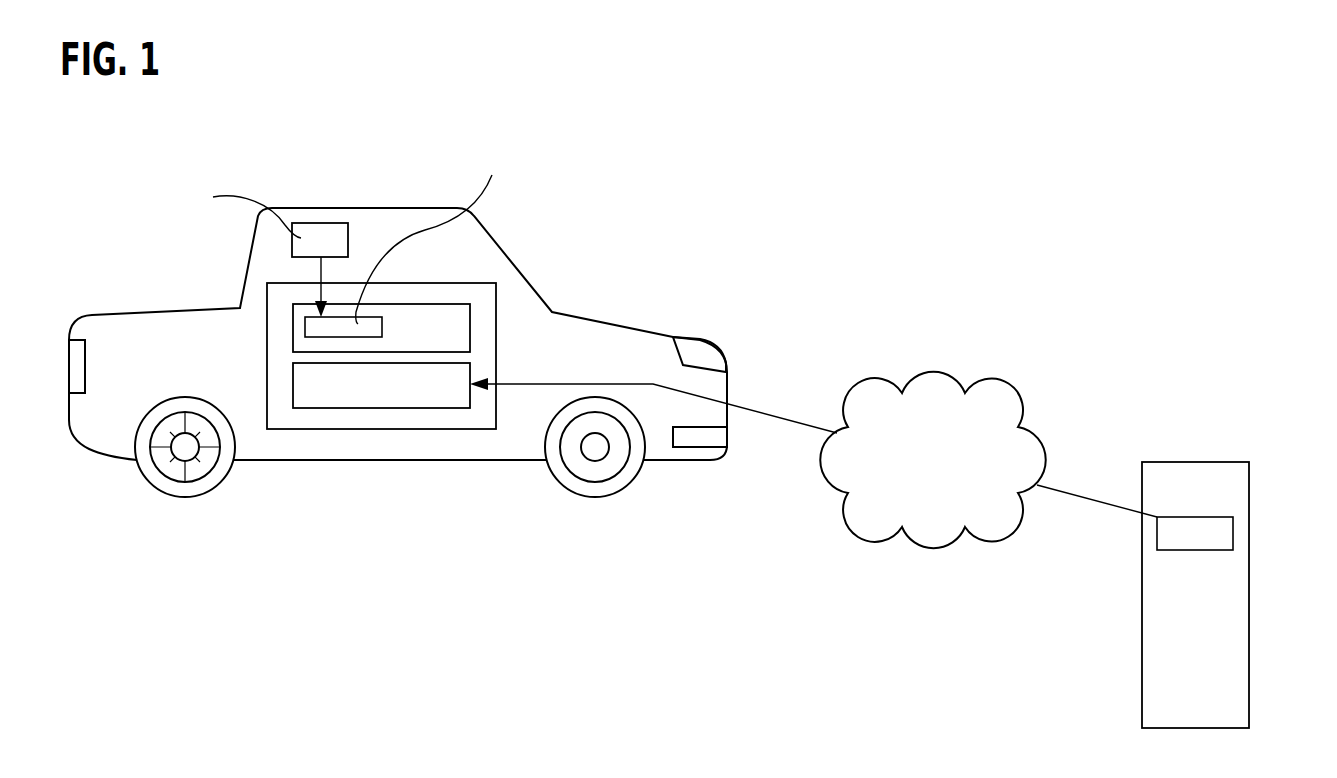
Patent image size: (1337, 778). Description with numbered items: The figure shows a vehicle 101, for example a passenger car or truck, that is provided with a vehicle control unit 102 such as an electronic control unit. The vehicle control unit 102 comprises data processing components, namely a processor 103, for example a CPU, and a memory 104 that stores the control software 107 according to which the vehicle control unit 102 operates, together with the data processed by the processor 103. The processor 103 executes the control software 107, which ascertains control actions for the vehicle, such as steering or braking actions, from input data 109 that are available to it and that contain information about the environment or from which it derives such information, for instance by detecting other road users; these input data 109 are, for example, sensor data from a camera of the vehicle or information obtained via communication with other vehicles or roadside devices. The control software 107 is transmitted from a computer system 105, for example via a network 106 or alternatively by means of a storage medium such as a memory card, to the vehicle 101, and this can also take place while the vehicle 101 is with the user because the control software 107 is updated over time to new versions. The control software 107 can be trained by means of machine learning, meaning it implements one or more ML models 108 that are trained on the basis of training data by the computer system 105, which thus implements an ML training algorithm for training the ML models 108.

The vehicle 101 is at (407, 210).
The vehicle control unit 102 is at (398, 429).
The processor 103 is at (293, 327).
The memory 104 is at (310, 408).
The computer system 105 is at (1197, 462).
The network 106 is at (943, 370).
The control software 107 is at (392, 330).
The ML models 108 is at (1212, 533).
The input data 109 is at (317, 238).